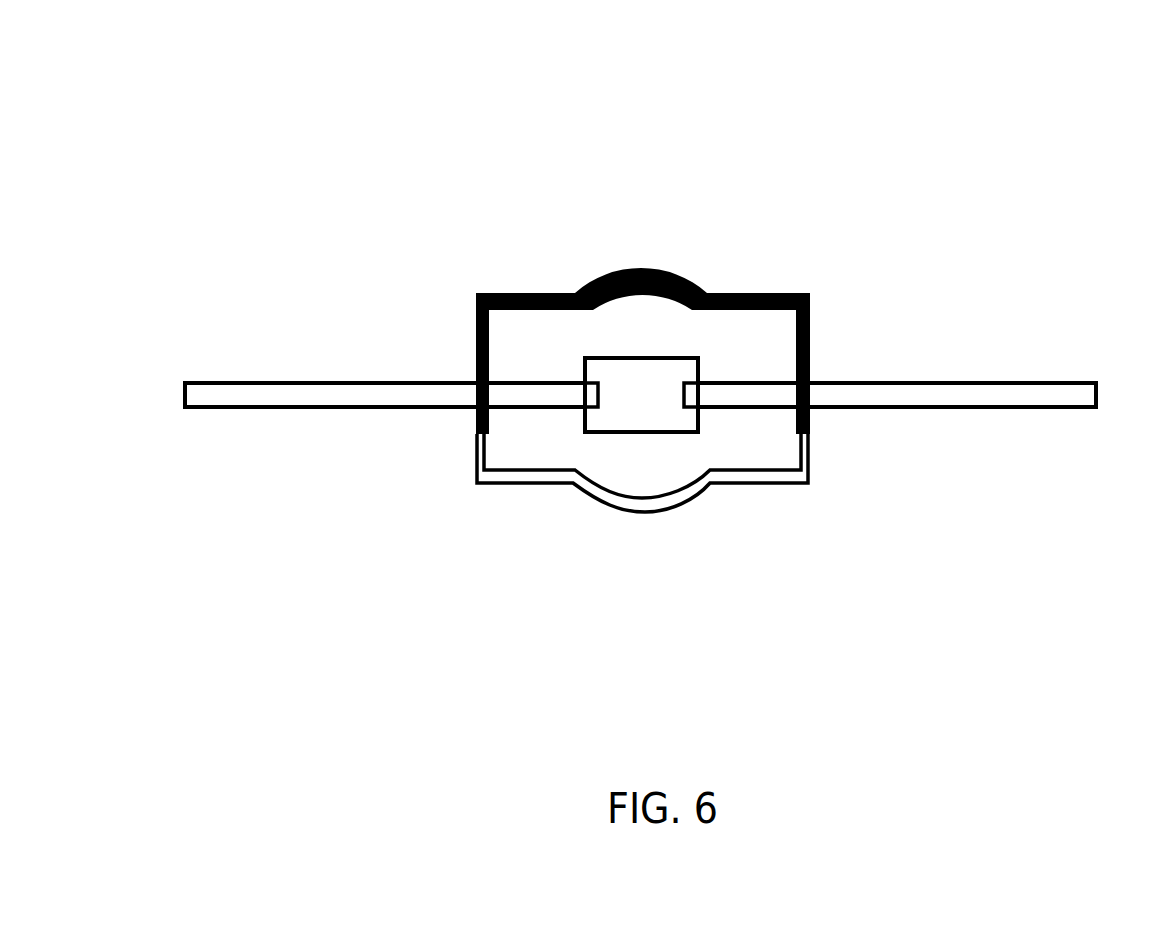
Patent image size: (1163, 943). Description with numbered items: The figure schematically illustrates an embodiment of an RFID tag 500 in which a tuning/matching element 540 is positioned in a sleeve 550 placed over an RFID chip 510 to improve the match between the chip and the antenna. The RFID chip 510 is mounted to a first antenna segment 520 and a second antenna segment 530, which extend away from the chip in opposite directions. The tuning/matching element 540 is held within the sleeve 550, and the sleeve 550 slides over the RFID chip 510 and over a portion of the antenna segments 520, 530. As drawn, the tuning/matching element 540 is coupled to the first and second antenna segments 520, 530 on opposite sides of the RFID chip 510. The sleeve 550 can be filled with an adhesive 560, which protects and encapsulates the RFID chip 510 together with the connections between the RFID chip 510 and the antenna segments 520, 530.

The RFID tag 500 is at (476, 148).
The RFID chip 510 is at (653, 410).
The first antenna segment 520 is at (370, 395).
The second antenna segment 530 is at (992, 395).
The tuning/matching element 540 is at (704, 291).
The sleeve 550 is at (803, 472).
The adhesive 560 is at (540, 443).